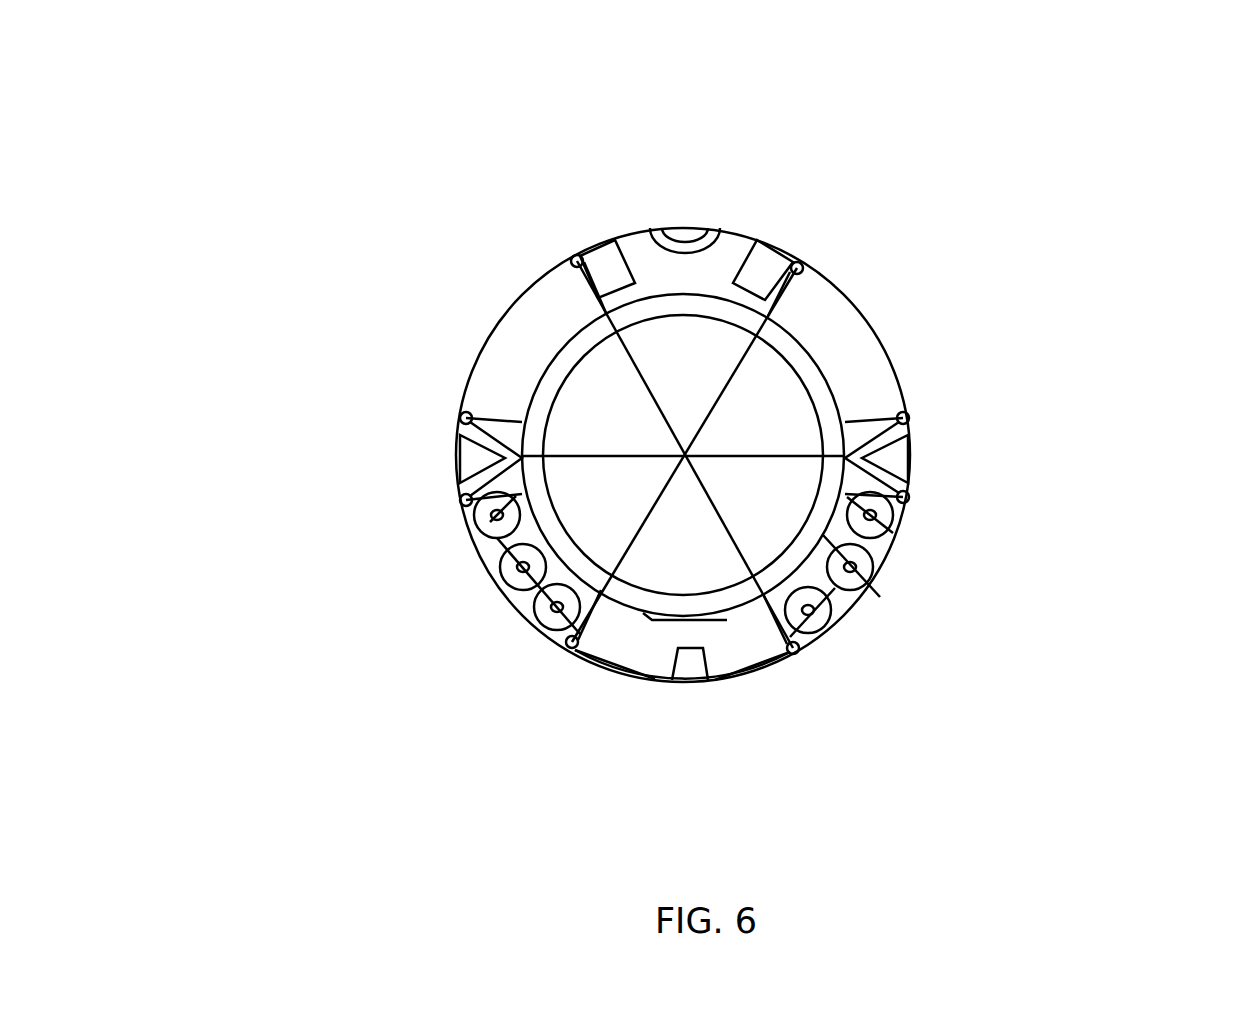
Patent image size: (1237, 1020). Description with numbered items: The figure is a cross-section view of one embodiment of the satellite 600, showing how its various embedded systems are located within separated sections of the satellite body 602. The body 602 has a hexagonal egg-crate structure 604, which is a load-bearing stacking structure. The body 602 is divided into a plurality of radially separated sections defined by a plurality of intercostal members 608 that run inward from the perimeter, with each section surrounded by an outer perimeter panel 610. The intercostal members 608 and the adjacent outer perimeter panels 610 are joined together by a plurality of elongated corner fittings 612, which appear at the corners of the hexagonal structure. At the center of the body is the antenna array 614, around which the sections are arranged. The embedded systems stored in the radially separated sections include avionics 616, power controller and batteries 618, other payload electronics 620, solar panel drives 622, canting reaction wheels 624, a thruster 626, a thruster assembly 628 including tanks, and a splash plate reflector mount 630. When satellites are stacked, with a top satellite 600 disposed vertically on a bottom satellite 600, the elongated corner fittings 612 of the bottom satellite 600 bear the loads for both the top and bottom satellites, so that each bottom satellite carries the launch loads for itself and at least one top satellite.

The satellite 600 is at (858, 104).
The satellite body 602 is at (786, 662).
The hexagonal egg-crate structure 604 is at (458, 500).
The intercostal members 608 is at (614, 570).
The outer perimeter panel 610 is at (505, 601).
The elongated corner fittings 612 is at (566, 650).
The antenna array 614 is at (778, 383).
The avionics 616 is at (606, 261).
The power controller and batteries 618 is at (950, 265).
The other payload electronics 620 is at (822, 404).
The solar panel drives 622 is at (973, 450).
The canting reaction wheels 624 is at (935, 552).
The thruster 626 is at (684, 668).
The thruster assembly 628 is at (754, 655).
The splash plate reflector mount 630 is at (672, 228).